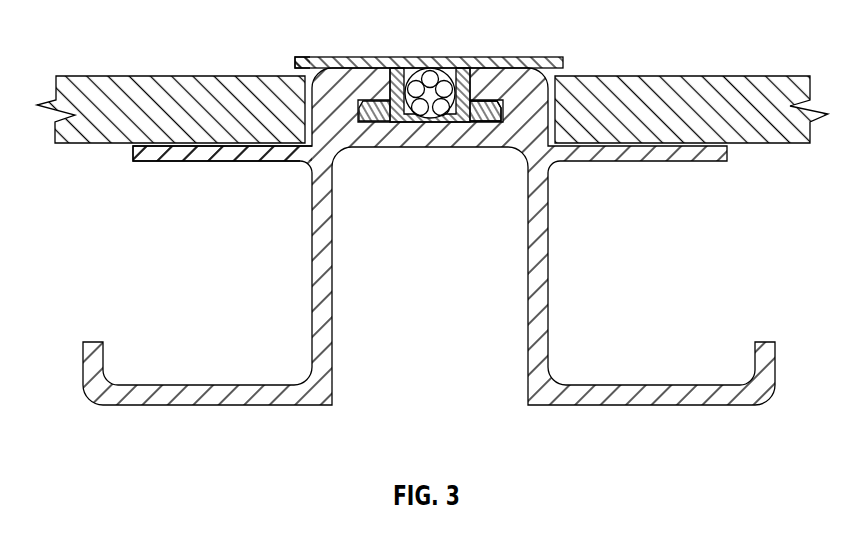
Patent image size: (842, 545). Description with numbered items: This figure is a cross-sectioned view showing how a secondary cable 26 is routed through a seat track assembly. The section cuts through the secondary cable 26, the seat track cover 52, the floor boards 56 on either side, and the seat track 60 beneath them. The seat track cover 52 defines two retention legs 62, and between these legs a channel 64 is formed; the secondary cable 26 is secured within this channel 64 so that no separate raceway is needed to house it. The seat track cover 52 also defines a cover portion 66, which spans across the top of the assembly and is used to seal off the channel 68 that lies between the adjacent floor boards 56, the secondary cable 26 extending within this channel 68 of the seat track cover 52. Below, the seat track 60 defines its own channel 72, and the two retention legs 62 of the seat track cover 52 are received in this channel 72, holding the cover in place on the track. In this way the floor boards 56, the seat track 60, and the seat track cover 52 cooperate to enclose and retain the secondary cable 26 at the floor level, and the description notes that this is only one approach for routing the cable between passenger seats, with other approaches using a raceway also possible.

The secondary cable 26 is at (447, 72).
The seat track cover 52 is at (530, 57).
The floor board 56 is at (228, 88).
The seat track 60 is at (318, 162).
The retention legs 62 is at (392, 122).
The channel 64 is at (410, 68).
The cover portion 66 is at (357, 66).
The channel 68 is at (301, 57).
The channel 72 is at (487, 120).